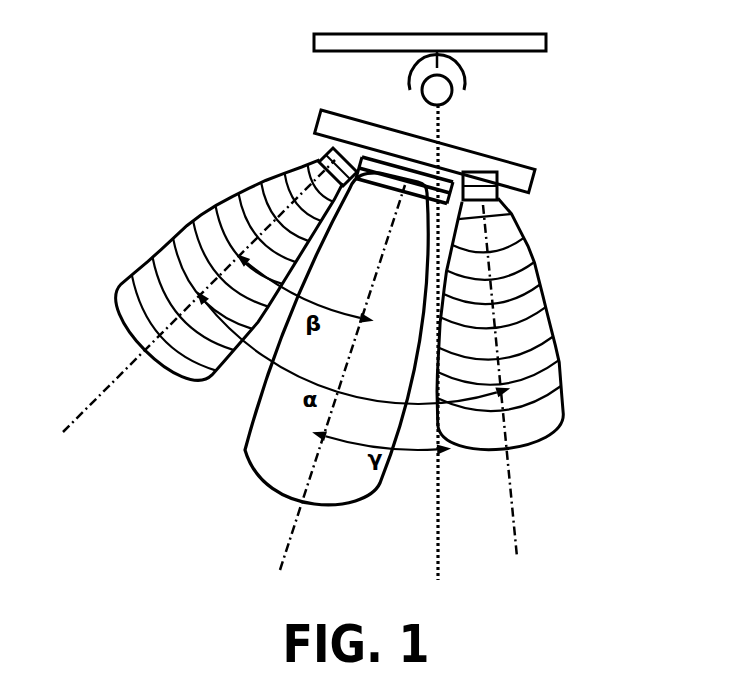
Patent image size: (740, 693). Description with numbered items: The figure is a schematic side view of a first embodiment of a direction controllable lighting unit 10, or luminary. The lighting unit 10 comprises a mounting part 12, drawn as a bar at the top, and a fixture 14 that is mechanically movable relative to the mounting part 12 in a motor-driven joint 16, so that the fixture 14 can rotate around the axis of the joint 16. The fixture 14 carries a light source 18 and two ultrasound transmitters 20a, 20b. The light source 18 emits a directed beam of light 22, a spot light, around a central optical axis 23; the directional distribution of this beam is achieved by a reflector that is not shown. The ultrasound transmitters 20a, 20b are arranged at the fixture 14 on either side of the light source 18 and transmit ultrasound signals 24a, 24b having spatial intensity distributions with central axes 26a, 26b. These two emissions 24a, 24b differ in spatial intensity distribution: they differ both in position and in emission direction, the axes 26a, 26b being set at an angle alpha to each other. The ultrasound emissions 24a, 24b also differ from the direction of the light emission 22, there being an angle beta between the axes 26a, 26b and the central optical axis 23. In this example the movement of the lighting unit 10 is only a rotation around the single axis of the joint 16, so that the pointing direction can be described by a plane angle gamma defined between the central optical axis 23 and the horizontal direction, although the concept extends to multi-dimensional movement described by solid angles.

The direction controllable lighting unit 10 is at (180, 52).
The mounting part 12 is at (547, 43).
The fixture 14 is at (515, 163).
The motor-driven joint 16 is at (470, 87).
The light source 18 is at (387, 173).
The ultrasound transmitter 20a is at (323, 164).
The ultrasound transmitter 20b is at (498, 203).
The directed beam of light 22 is at (269, 461).
The central optical axis 23 is at (287, 550).
The ultrasound signal 24a is at (207, 227).
The ultrasound signal 24b is at (538, 323).
The central axis 26a is at (92, 403).
The central axis 26b is at (515, 538).